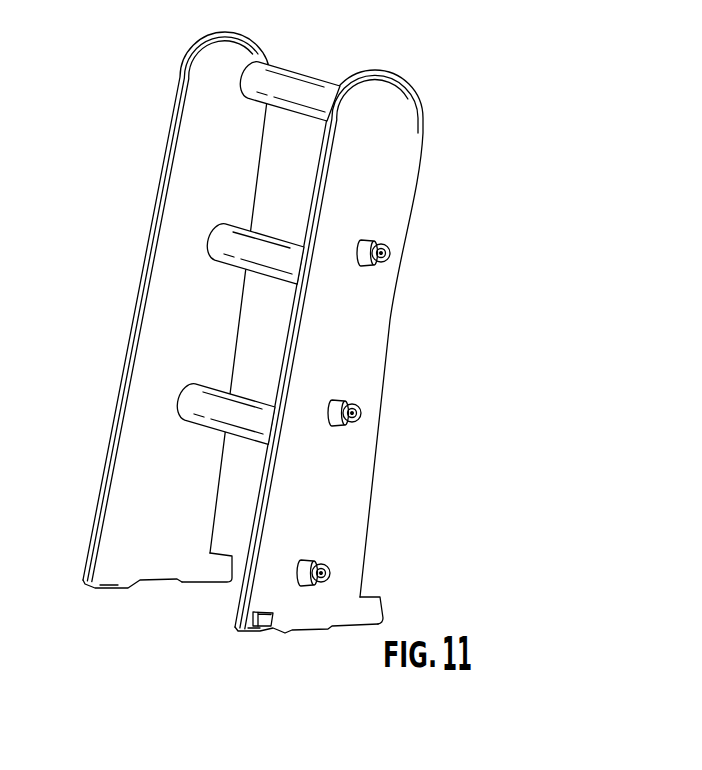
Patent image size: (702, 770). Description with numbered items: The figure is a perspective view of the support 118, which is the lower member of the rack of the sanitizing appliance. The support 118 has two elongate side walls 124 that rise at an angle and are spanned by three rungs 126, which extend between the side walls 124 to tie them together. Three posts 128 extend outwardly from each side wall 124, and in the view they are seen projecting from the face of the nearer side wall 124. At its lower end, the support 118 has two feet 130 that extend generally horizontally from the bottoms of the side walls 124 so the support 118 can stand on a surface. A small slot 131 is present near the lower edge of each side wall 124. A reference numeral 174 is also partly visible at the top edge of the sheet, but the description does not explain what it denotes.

The support 118 is at (310, 344).
The side wall 124 is at (185, 232).
The rung 126 is at (300, 95).
The post 128 is at (389, 257).
The foot 130 is at (220, 560).
The slot 131 is at (260, 628).
The element 174 is at (443, 8).